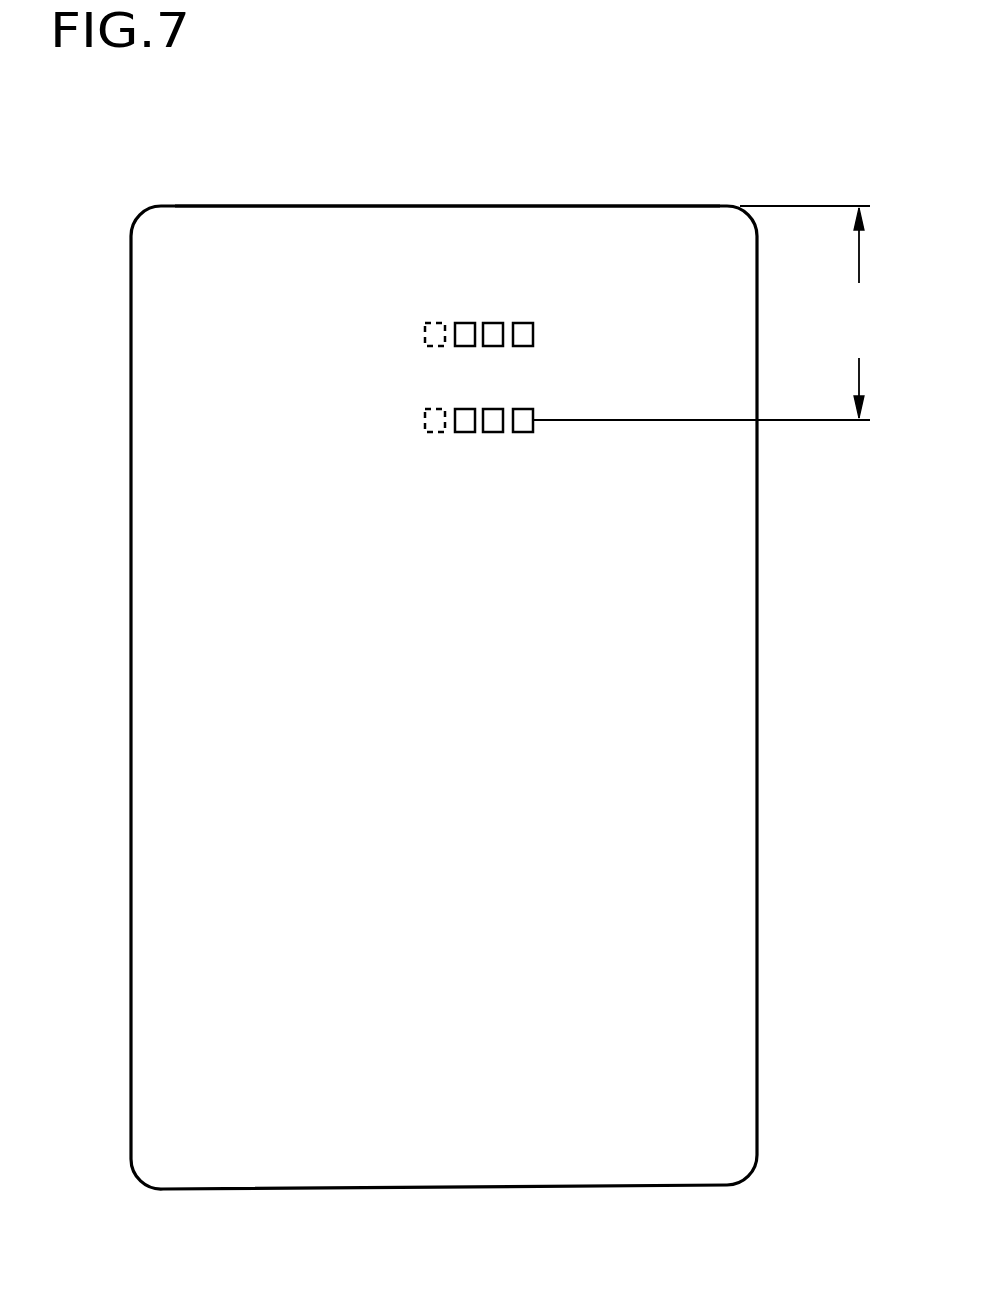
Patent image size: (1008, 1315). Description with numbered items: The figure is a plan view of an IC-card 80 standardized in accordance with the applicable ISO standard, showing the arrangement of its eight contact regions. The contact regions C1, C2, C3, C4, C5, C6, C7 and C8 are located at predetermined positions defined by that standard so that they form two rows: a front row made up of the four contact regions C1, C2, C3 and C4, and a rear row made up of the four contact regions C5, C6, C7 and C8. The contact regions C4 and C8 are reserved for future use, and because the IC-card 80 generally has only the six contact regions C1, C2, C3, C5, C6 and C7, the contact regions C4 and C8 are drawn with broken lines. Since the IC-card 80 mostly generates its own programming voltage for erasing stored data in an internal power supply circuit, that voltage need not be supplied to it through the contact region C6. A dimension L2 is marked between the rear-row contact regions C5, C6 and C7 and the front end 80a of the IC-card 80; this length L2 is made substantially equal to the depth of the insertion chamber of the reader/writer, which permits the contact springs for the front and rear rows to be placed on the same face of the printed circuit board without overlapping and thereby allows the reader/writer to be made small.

The IC-card 80 is at (762, 663).
The front end of the IC-card 80a is at (650, 206).
The contact region C1 is at (525, 323).
The contact region C2 is at (496, 323).
The contact region C3 is at (460, 323).
The contact region C4 is at (428, 323).
The contact region C5 is at (522, 432).
The contact region C6 is at (493, 432).
The contact region C7 is at (465, 432).
The contact region C8 is at (432, 428).
The length between the rear-row contact regions and the front end L2 is at (704, 313).